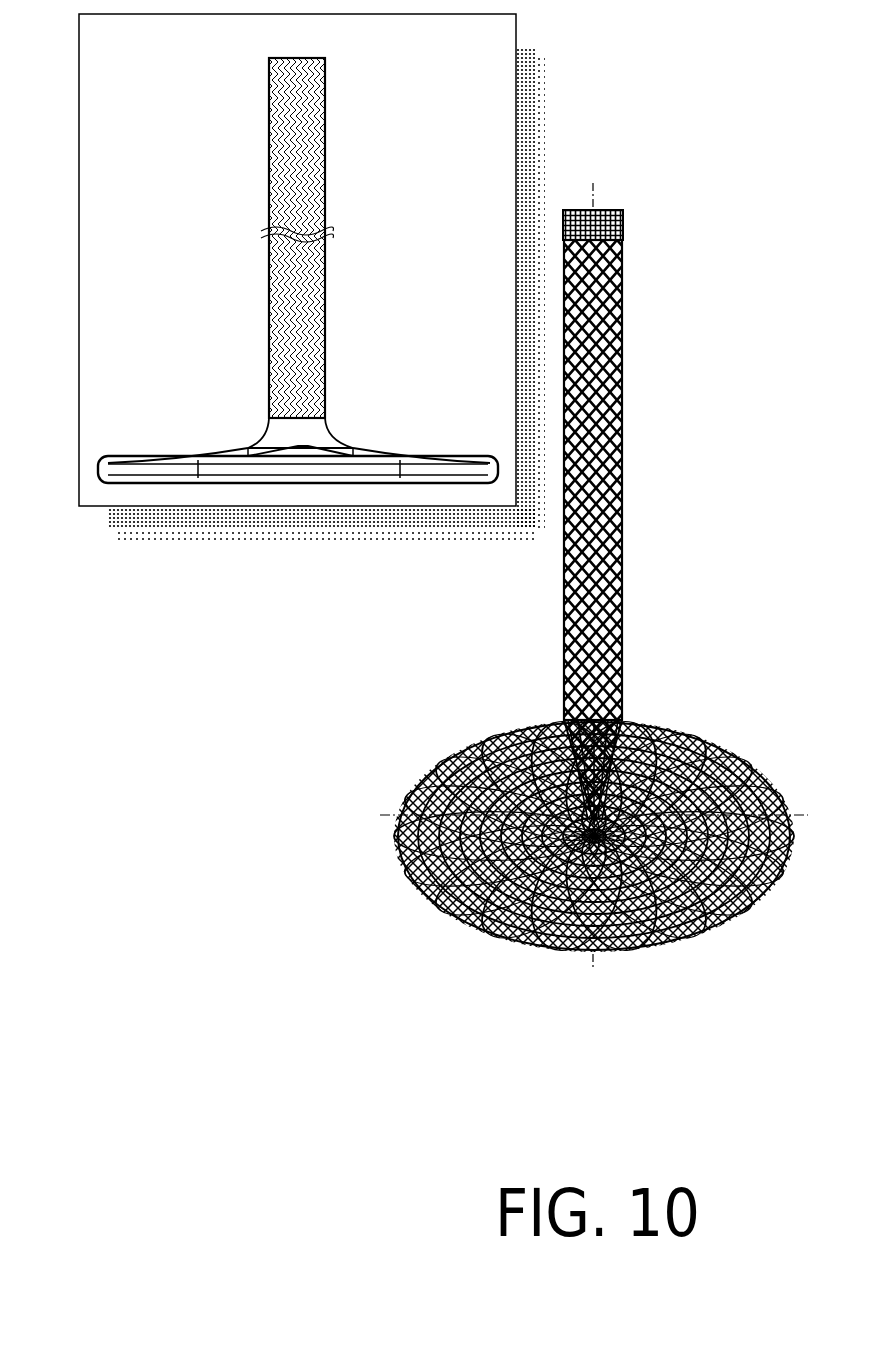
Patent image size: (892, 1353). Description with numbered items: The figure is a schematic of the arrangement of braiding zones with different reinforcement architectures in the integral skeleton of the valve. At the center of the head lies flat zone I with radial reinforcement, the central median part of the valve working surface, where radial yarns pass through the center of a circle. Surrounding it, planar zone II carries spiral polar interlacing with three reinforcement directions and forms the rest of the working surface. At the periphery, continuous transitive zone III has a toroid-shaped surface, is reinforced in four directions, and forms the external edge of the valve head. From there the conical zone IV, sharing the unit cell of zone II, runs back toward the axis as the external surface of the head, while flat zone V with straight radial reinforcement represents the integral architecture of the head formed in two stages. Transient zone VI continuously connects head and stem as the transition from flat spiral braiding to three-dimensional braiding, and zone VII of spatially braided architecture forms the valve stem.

The flat zone with radial reinforcement I is at (313, 478).
The planar zone with spiral polar interlacing II is at (154, 478).
The continuous transitive zone III is at (474, 445).
The conical zone IV is at (302, 438).
The flat zone with straight radial reinforcement V is at (216, 440).
The transient zone VI is at (264, 416).
The zone of spatially braided architecture VII is at (270, 181).